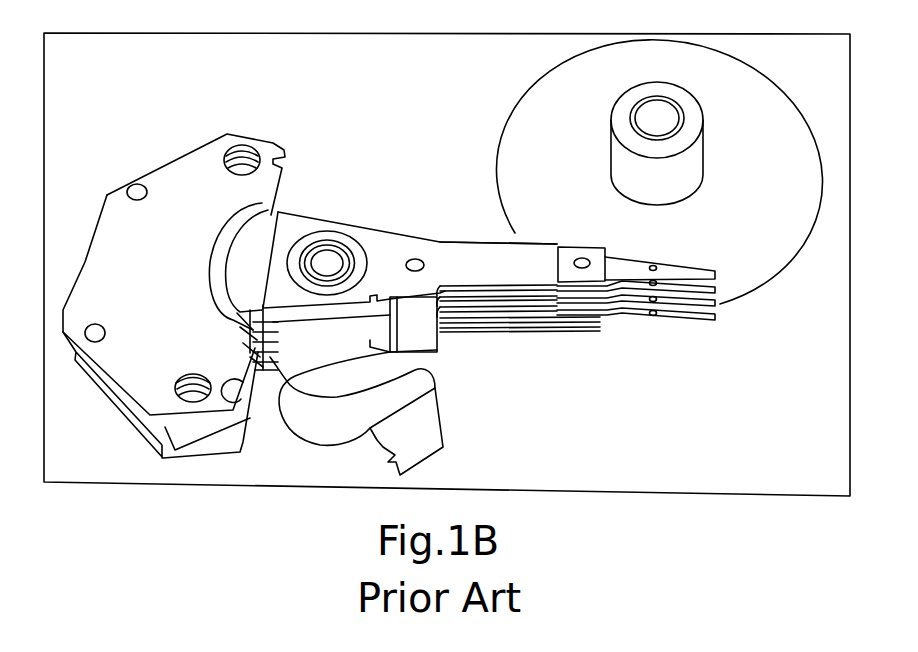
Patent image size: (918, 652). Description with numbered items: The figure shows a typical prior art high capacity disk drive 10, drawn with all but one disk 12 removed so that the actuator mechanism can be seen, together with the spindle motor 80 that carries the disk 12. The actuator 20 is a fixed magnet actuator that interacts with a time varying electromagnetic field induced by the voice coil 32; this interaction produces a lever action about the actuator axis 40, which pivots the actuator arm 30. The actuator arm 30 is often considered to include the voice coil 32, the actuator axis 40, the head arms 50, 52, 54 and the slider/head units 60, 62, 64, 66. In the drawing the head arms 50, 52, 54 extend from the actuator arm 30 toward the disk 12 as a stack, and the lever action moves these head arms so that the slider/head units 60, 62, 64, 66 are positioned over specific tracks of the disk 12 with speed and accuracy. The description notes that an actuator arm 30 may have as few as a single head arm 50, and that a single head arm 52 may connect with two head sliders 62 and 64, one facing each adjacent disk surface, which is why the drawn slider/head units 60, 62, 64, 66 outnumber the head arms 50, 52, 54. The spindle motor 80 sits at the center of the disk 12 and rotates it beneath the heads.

The high capacity disk drive 10 is at (353, 86).
The disk 12 is at (743, 80).
The actuator 20 is at (185, 177).
The actuator arm 30 is at (577, 252).
The voice coil 32 is at (240, 273).
The actuator axis 40 is at (330, 257).
The head arm 50 is at (503, 253).
The head arm 52 is at (555, 310).
The head arm 54 is at (533, 323).
The slider/head unit 60 is at (695, 272).
The slider/head unit 62 is at (715, 297).
The slider/head unit 64 is at (703, 308).
The slider/head unit 66 is at (680, 315).
The spindle motor 80 is at (695, 162).